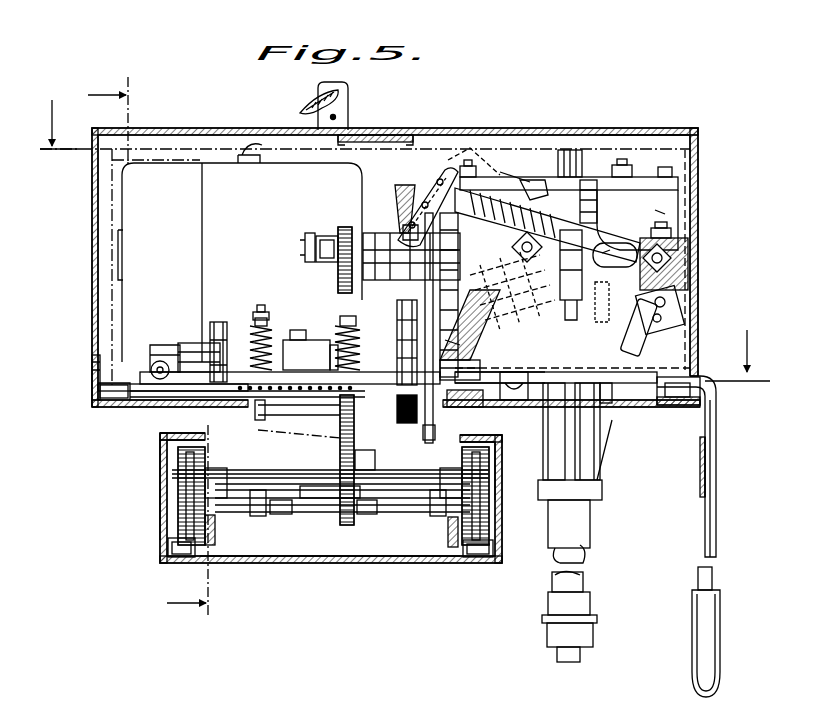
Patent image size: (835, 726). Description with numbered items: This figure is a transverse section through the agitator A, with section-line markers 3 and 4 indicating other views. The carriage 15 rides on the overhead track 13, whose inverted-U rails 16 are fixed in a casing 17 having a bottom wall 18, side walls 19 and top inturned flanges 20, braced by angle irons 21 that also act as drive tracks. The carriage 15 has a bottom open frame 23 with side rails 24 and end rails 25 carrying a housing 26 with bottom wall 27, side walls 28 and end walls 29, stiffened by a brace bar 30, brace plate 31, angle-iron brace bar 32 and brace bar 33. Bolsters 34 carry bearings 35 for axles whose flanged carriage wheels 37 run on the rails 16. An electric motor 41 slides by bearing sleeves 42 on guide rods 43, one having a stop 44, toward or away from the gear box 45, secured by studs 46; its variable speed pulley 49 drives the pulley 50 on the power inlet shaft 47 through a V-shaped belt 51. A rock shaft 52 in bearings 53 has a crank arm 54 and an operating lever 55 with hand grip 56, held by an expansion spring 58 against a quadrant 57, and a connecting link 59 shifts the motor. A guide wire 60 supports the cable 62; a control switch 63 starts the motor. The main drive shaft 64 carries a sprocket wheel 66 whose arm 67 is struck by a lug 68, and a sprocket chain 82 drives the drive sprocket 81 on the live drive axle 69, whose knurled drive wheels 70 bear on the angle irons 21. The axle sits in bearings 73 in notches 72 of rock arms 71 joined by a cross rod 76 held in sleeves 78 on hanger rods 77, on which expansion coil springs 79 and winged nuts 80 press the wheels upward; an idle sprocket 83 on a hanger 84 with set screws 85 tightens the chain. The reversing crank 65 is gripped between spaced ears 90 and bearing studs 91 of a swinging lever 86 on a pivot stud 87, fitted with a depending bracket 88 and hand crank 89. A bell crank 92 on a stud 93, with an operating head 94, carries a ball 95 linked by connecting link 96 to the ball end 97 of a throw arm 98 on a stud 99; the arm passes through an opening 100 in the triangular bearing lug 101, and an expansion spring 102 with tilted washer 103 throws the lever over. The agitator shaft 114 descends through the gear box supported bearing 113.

The agitator A is at (700, 132).
The section line 3- 3 is at (157, 348).
The section line 4- 4 is at (405, 256).
The overhead track 13 is at (333, 564).
The carriage 15 is at (701, 172).
The rails 16 is at (168, 548).
The casing 17 is at (159, 515).
The bottom wall 18 is at (275, 563).
The side walls 19 is at (160, 480).
The top inturned flanges 20 is at (176, 433).
The angle irons 21 is at (160, 442).
The bottom open frame 23 is at (98, 398).
The side rails 24 is at (98, 362).
The end rails 25 is at (635, 398).
The housing 26 is at (701, 214).
The bottom wall 27 is at (610, 420).
The side walls 28 is at (90, 258).
The end walls 29 is at (218, 143).
The brace bar 30 is at (462, 364).
The brace plate 31 is at (182, 347).
The angle iron brace bar 32 is at (480, 350).
The brace bar 33 is at (548, 375).
The bolsters 34 is at (222, 405).
The bearings 35 is at (400, 512).
The flanged carriage wheels 37 is at (212, 525).
The electric motor 41 is at (237, 226).
The bearing sleeves 42 is at (172, 345).
The guide rods 43 is at (150, 375).
The stop 44 is at (182, 384).
The gear box 45 is at (661, 214).
The studs 46 is at (510, 374).
The power inlet shaft 47 is at (452, 345).
The variable speed pulley 49 is at (397, 345).
The pulley 50 is at (397, 200).
The V-shaped pulley belt 51 is at (397, 310).
The rock shaft 52 is at (292, 340).
The bearings 53 is at (333, 345).
The crank arm 54 is at (219, 322).
The operating lever 55 is at (716, 503).
The hand grip 56 is at (720, 610).
The quadrant 57 is at (706, 465).
The expansion spring 58 is at (338, 340).
The connecting link 59 is at (253, 314).
The guide wire 60 is at (337, 117).
The cable 62 is at (312, 100).
The control switch 63 is at (591, 501).
The main drive shaft 64 is at (322, 262).
The operating crank 65 is at (610, 252).
The sprocket wheel 66 is at (363, 240).
The forwardly extending arm 67 is at (324, 240).
The radially extending lug 68 is at (300, 248).
The live drive axle 69 is at (365, 490).
The drive wheels 70 is at (178, 470).
The rock arms 71 is at (258, 516).
The notches 72 is at (227, 480).
The bearings 73 is at (205, 460).
The cross rod 76 is at (325, 498).
The hanger rods 77 is at (338, 462).
The sleeves 78 is at (283, 514).
The expansion coil springs 79 is at (397, 360).
The winged nuts 80 is at (397, 325).
The drive sprocket 81 is at (340, 468).
The sprocket chain 82 is at (315, 435).
The idle sprocket 83 is at (320, 410).
The hanger 84 is at (397, 423).
The set screws 85 is at (265, 410).
The swinging lever 86 is at (588, 232).
The pivot stud 87 is at (672, 258).
The depending bracket 88 is at (672, 300).
The hand crank 89 is at (650, 325).
The spaced ears 90 is at (603, 214).
The bearing studs 91 is at (592, 190).
The bell crank 92 is at (458, 260).
The stud 93 is at (488, 308).
The operating head 94 is at (432, 443).
The ball 95 is at (408, 225).
The connecting link 96 is at (445, 170).
The ball end 97 is at (472, 153).
The throw arm 98 is at (490, 195).
The stud 99 is at (562, 280).
The opening 100 is at (512, 247).
The triangular shaped bearing lug 101 is at (455, 192).
The expansion spring 102 is at (510, 225).
The tilted washer 103 is at (490, 205).
The gear box supported bearing 113 is at (585, 552).
The agitator shaft 114 is at (582, 655).